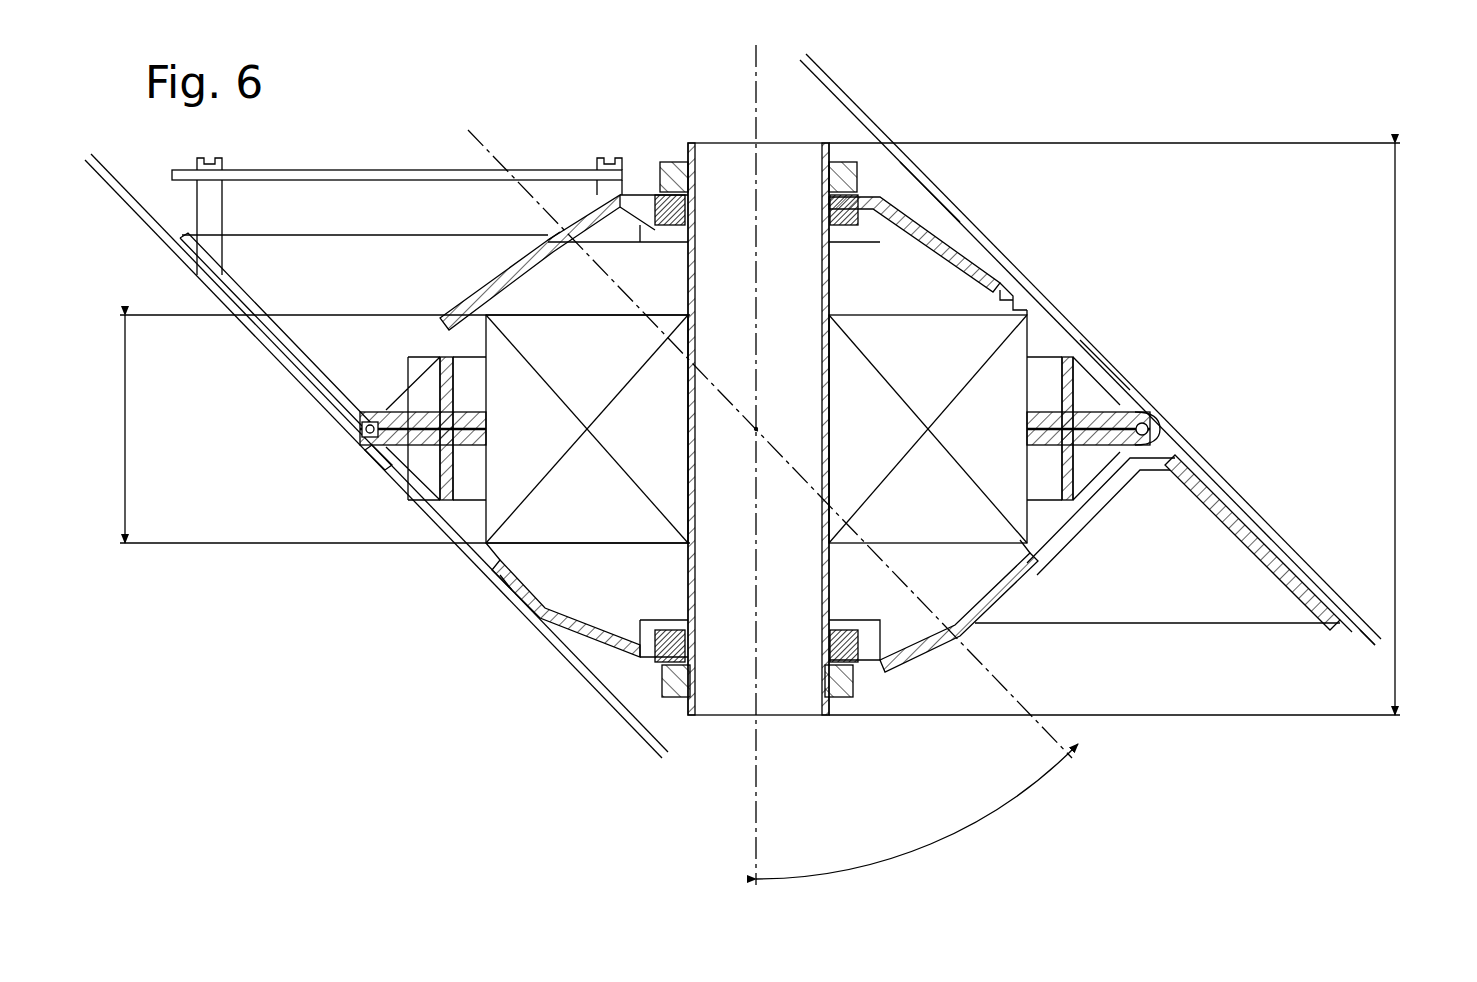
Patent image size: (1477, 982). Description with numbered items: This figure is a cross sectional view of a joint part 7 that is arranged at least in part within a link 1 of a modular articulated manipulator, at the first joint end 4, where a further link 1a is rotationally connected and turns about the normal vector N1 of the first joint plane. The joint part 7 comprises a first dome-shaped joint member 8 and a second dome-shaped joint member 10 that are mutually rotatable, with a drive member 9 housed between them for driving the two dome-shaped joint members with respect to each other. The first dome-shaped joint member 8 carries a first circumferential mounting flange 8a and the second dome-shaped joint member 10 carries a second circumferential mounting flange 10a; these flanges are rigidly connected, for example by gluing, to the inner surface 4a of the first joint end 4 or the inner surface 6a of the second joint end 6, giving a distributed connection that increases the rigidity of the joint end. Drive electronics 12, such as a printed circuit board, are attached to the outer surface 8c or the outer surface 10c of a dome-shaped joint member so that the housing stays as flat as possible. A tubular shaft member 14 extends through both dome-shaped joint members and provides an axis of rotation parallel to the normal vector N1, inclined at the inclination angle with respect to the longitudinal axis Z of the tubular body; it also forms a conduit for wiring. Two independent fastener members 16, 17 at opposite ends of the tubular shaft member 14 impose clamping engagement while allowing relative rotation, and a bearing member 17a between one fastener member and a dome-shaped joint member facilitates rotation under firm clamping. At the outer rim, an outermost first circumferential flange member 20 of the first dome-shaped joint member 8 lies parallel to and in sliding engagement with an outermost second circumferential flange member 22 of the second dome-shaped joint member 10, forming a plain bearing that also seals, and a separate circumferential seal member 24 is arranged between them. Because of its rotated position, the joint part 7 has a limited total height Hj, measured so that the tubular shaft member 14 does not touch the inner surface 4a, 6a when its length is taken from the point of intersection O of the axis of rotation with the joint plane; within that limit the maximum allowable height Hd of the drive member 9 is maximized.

The link 1 is at (920, 128).
The further link 1a is at (1405, 608).
The first joint end 4 is at (1100, 380).
The inner surface of the first joint end 4a is at (925, 200).
The second joint end 6 is at (1318, 600).
The inner surface of the second joint end 6a is at (1345, 635).
The joint part 7 is at (460, 318).
The first dome-shaped joint member 8 is at (920, 210).
The first circumferential mounting flange 8a is at (240, 262).
The outer surface of the first dome-shaped joint member 8c is at (560, 195).
The drive member 9 is at (945, 315).
The second dome-shaped joint member 10 is at (908, 652).
The second circumferential mounting flange 10a is at (1235, 595).
The outer surface of the second dome-shaped joint member 10c is at (1015, 580).
The drive electronics 12 is at (402, 170).
The tubular shaft member 14 is at (736, 716).
The fastener member 16 is at (670, 172).
The fastener member 17 is at (650, 735).
The bearing member 17a is at (640, 660).
The outermost first circumferential flange member 20 is at (358, 425).
The outermost second circumferential flange member 22 is at (372, 455).
The circumferential seal member 24 is at (362, 438).
The normal vector N1 is at (756, 68).
The longitudinal axis Z is at (470, 138).
The point of intersection O is at (758, 428).
The total height Hj is at (1126, 429).
The maximum allowable height Hd is at (405, 429).